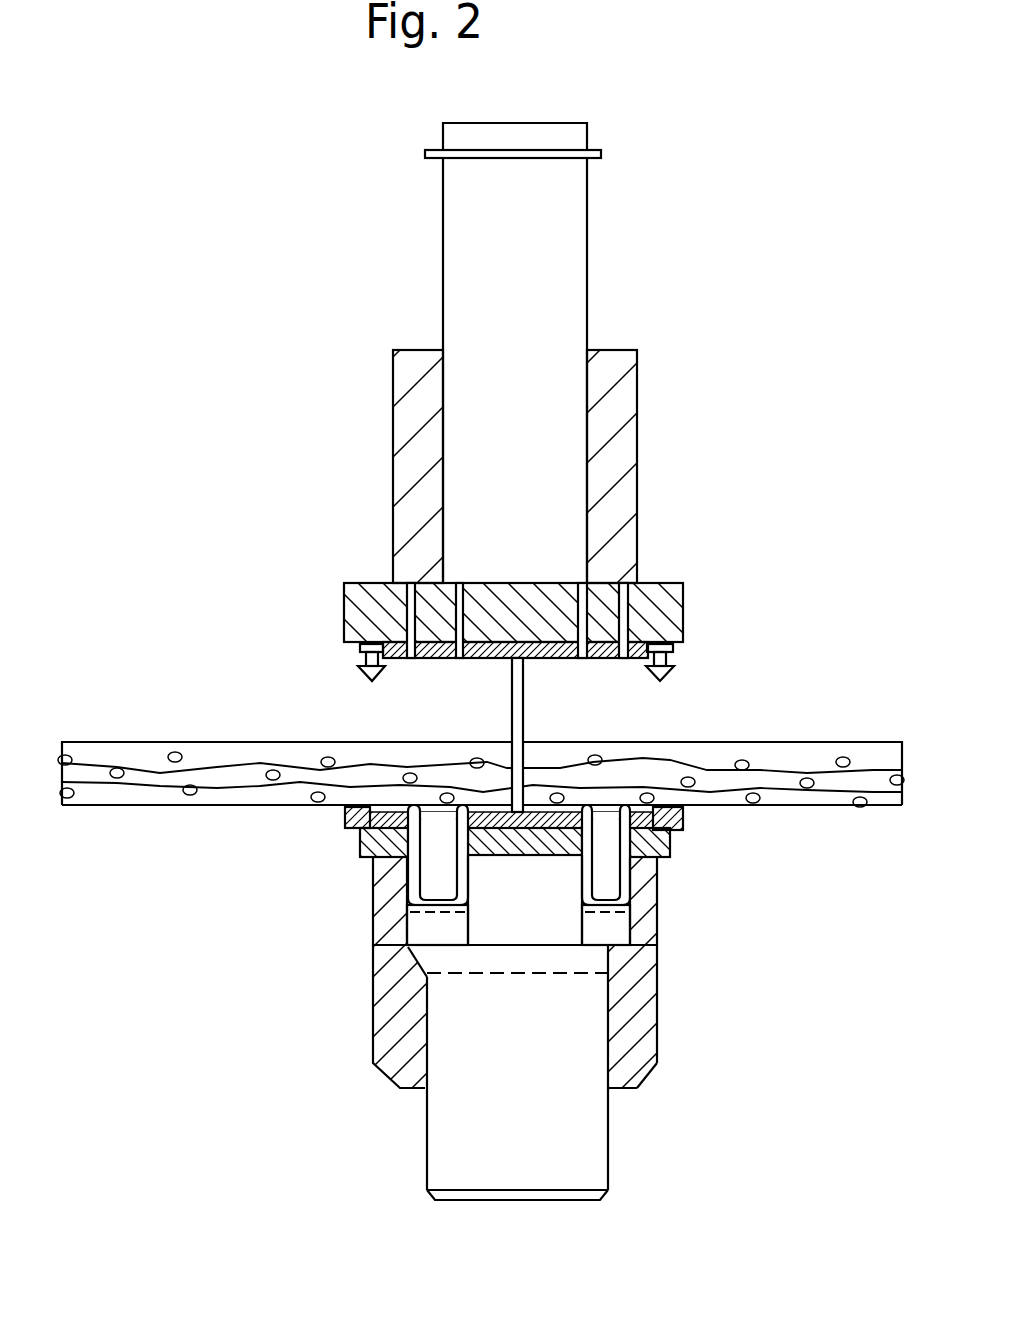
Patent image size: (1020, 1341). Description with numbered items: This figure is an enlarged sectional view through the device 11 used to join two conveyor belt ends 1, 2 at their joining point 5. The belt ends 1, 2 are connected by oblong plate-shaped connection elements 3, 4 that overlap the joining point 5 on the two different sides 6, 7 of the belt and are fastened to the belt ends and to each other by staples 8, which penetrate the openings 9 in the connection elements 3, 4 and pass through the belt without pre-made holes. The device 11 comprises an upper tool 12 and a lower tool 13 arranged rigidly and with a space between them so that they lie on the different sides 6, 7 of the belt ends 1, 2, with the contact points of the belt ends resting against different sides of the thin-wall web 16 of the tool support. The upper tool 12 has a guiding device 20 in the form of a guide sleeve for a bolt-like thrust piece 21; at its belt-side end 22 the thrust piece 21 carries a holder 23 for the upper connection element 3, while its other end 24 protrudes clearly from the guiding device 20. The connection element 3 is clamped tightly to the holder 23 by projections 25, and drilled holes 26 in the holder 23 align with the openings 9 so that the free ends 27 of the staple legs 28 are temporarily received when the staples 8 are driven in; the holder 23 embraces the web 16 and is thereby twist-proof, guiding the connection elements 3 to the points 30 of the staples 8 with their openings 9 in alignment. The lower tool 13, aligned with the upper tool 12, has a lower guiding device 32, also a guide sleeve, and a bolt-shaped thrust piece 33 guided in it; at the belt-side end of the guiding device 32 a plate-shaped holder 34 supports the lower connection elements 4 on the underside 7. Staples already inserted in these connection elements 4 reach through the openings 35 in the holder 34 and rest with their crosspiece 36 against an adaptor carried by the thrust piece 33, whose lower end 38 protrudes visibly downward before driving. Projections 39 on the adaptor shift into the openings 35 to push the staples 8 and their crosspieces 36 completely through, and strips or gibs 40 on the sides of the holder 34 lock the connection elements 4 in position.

The conveyor belt end 1 is at (348, 762).
The conveyor belt end 2 is at (672, 758).
The connection element 3 is at (545, 640).
The connection element 4 is at (533, 833).
The joining point 5 is at (508, 760).
The side of the conveyor belt 6 is at (814, 741).
The underside of the conveyor belt 7 is at (838, 808).
The staple 8 is at (645, 915).
The opening 9 is at (627, 656).
The device 11 is at (214, 280).
The upper tool 12 is at (710, 418).
The lower tool 13 is at (652, 1077).
The web 16 is at (516, 710).
The guiding device 20 is at (638, 385).
The thrust piece 21 is at (589, 268).
The end of the thrust piece 22 is at (578, 556).
The holder 23 is at (672, 607).
The other end of the thrust piece 24 is at (570, 197).
The projection 25 is at (681, 661).
The drilled hole 26 is at (463, 583).
The free end of the staple leg 27 is at (627, 865).
The leg of the staple 28 is at (657, 897).
The point of the staple 30 is at (625, 808).
The lower guiding device 32 is at (400, 1065).
The thrust piece 33 is at (442, 1120).
The plate-shaped holder 34 is at (668, 845).
The opening 35 is at (428, 838).
The crosspiece 36 is at (406, 940).
The lower end of the thrust piece 38 is at (531, 1200).
The projection 39 is at (620, 935).
The strip or gib 40 is at (684, 823).